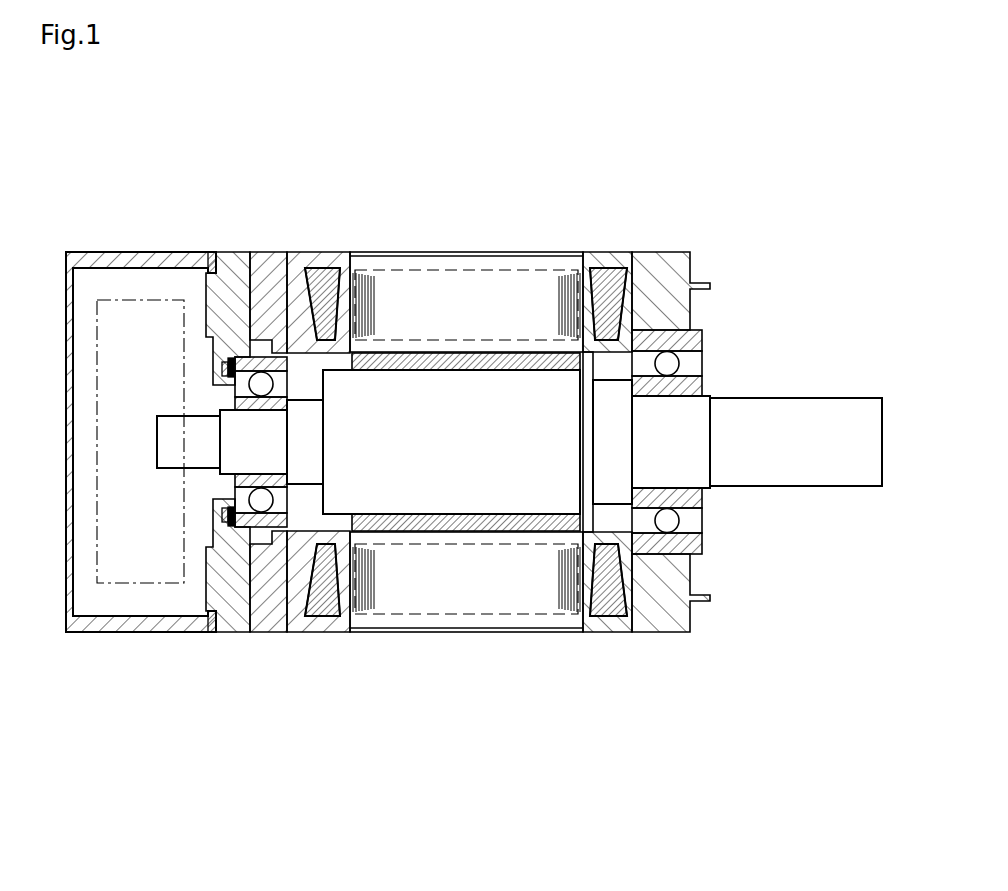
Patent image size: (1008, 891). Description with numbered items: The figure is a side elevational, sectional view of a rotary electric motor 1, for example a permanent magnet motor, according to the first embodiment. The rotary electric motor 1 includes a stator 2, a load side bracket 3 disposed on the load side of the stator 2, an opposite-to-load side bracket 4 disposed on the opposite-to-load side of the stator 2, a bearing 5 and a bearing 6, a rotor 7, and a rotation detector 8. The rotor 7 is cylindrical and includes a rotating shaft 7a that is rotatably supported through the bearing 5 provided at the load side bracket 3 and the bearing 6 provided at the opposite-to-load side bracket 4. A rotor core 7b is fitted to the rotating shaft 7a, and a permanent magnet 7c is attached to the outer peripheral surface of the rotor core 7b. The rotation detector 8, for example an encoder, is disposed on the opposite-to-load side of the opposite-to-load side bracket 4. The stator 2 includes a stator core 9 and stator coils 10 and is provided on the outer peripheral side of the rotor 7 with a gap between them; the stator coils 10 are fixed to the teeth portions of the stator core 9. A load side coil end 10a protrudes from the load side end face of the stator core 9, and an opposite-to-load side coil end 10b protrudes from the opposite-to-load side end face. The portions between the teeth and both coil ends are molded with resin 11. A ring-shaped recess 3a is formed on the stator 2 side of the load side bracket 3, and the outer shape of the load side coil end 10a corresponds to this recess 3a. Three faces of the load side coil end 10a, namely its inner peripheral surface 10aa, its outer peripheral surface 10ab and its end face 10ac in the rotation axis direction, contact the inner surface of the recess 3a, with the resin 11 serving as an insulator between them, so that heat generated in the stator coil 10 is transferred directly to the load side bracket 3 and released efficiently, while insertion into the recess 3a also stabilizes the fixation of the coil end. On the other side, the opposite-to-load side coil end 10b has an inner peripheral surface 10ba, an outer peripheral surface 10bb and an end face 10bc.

The rotary electric motor 1 is at (382, 227).
The stator 2 is at (487, 250).
The load side bracket 3 is at (709, 474).
The recess 3a is at (623, 305).
The opposite-to-load side bracket 4 is at (238, 612).
The bearing 5 is at (680, 497).
The bearing 6 is at (235, 480).
The rotor 7 is at (519, 561).
The rotating shaft 7a is at (808, 465).
The rotor core 7b is at (440, 500).
The permanent magnet 7c is at (385, 535).
The rotation detector 8 is at (127, 498).
The stator core 9 is at (395, 296).
The stator coil 10 is at (448, 440).
The load side coil end 10a is at (617, 280).
The inner peripheral surface 10aa is at (620, 353).
The outer peripheral surface 10ab is at (603, 267).
The end face 10ac is at (623, 280).
The opposite-to-load side coil end 10b is at (333, 262).
The inner peripheral surface 10ba is at (233, 370).
The outer peripheral surface 10bb is at (317, 273).
The end face 10bc is at (293, 312).
The resin 11 is at (276, 610).